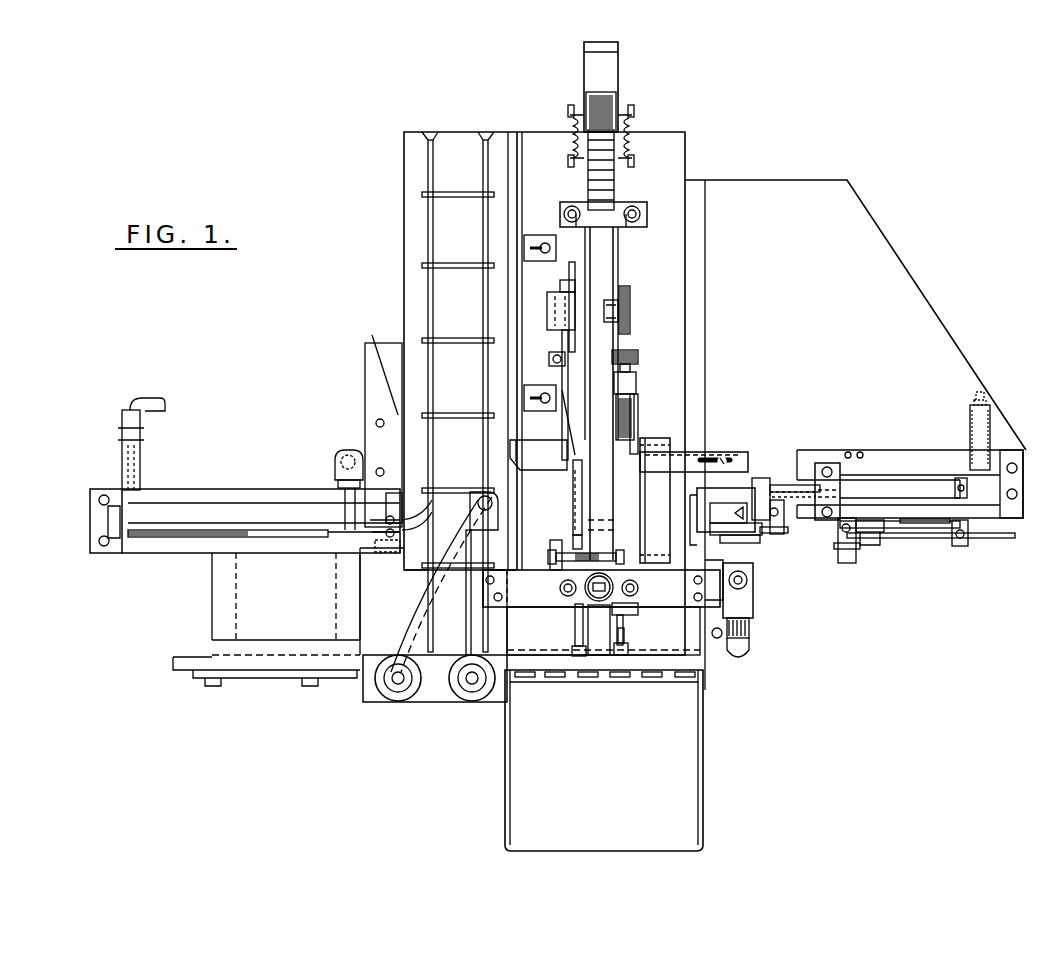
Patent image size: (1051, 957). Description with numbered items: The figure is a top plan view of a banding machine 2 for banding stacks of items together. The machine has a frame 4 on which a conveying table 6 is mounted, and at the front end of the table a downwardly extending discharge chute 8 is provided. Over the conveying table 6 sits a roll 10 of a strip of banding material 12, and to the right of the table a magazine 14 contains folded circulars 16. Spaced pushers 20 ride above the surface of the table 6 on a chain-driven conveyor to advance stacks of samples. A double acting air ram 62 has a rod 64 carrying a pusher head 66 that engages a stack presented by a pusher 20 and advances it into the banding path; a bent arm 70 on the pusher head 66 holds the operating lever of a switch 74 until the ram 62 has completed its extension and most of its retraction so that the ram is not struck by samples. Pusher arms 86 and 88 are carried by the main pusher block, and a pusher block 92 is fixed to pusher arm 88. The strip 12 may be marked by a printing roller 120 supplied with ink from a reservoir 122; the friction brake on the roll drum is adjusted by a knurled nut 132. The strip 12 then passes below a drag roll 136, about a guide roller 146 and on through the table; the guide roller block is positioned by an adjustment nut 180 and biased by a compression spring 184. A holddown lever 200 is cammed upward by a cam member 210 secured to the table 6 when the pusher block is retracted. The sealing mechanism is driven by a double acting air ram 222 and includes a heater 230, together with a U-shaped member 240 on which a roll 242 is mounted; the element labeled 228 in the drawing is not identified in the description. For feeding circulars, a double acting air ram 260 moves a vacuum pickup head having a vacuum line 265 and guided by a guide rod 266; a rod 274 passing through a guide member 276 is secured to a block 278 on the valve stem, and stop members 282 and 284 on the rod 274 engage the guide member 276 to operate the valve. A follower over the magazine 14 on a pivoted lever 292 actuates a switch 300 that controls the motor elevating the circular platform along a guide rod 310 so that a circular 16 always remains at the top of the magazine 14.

The banding machine 2 is at (730, 148).
The frame 4 is at (525, 590).
The conveying table 6 is at (456, 472).
The discharge chute 8 is at (610, 824).
The roll 10 is at (608, 276).
The strip of banding material 12 is at (593, 494).
The magazine 14 is at (740, 486).
The folded circulars 16 is at (728, 536).
The pushers 20 is at (464, 193).
The double acting air ram 62 is at (230, 506).
The rod 64 is at (370, 488).
The pusher head 66 is at (393, 500).
The bent arm 70 is at (320, 538).
The switch 74 is at (474, 498).
The pusher arm 86 is at (665, 446).
The pusher arm 88 is at (562, 399).
The pusher block 92 is at (553, 490).
The printing roller 120 is at (603, 179).
The reservoir 122 is at (622, 108).
The knurled nut 132 is at (637, 308).
The drag roll 136 is at (634, 444).
The guide roller 146 is at (624, 563).
The adjustment nut 180 is at (636, 351).
The compression spring 184 is at (636, 412).
The holddown lever 200 is at (575, 526).
The cam member 210 is at (556, 358).
The double acting air ram 222 is at (586, 610).
The mounting bolts 228 is at (568, 592).
The heater 230 is at (634, 610).
The U-shaped member 240 is at (580, 656).
The roll 242 is at (626, 658).
The double acting air ram 260 is at (910, 446).
The vacuum line 265 is at (773, 502).
The guide rod 266 is at (874, 487).
The rod 274 is at (998, 540).
The guide member 276 is at (868, 542).
The block 278 is at (785, 534).
The stop member 282 is at (840, 548).
The stop member 284 is at (962, 544).
The pivoted lever 292 is at (758, 532).
The switch 300 is at (938, 534).
The guide rod 310 is at (715, 636).